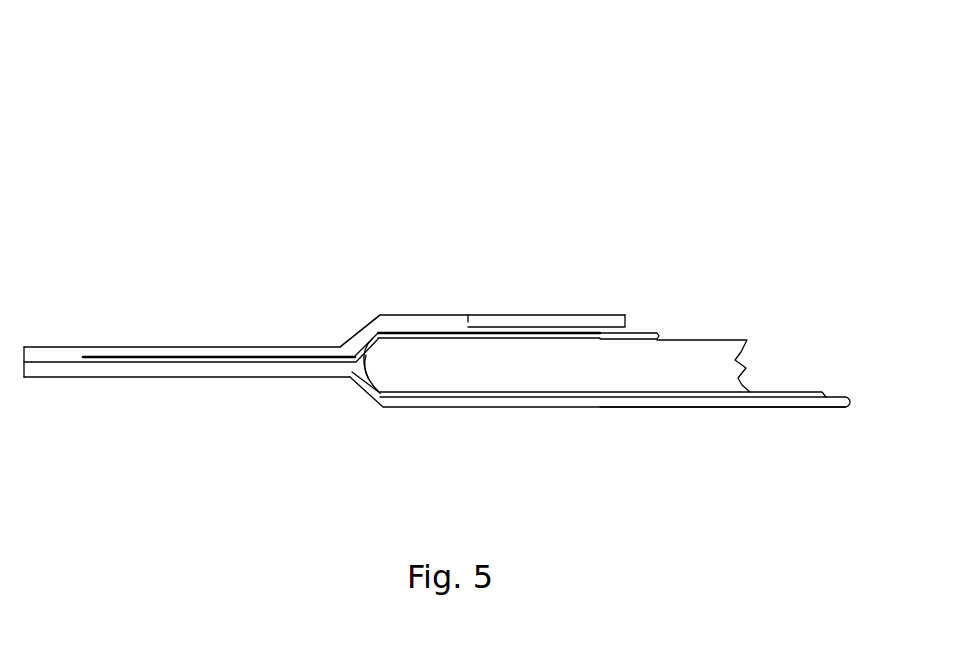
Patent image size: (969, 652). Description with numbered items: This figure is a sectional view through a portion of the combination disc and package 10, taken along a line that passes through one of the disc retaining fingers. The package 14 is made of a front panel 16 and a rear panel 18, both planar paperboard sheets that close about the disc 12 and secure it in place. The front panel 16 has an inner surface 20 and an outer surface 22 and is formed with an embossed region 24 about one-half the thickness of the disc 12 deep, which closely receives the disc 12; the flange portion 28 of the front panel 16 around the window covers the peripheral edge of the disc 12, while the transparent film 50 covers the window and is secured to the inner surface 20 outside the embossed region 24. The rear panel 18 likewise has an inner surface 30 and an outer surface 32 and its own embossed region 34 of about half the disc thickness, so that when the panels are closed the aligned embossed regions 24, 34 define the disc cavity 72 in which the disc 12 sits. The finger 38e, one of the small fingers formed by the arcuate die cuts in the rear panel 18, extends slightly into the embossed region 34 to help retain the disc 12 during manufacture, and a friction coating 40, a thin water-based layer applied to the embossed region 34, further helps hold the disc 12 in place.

The combination disc and package 10 is at (506, 180).
The disc 12 is at (718, 328).
The package 14 is at (124, 337).
The front panel 16 is at (227, 345).
The rear panel 18 is at (193, 378).
The inner surface 20 is at (605, 339).
The outer surface 22 is at (537, 315).
The embossed region 24 is at (380, 315).
The flange portion 28 is at (447, 317).
The inner surface 30 is at (833, 398).
The outer surface 32 is at (803, 410).
The embossed region 34 is at (600, 408).
The finger 38e is at (353, 372).
The friction coating 40 is at (778, 390).
The transparent film 50 is at (500, 334).
The disc cavity 72 is at (374, 383).